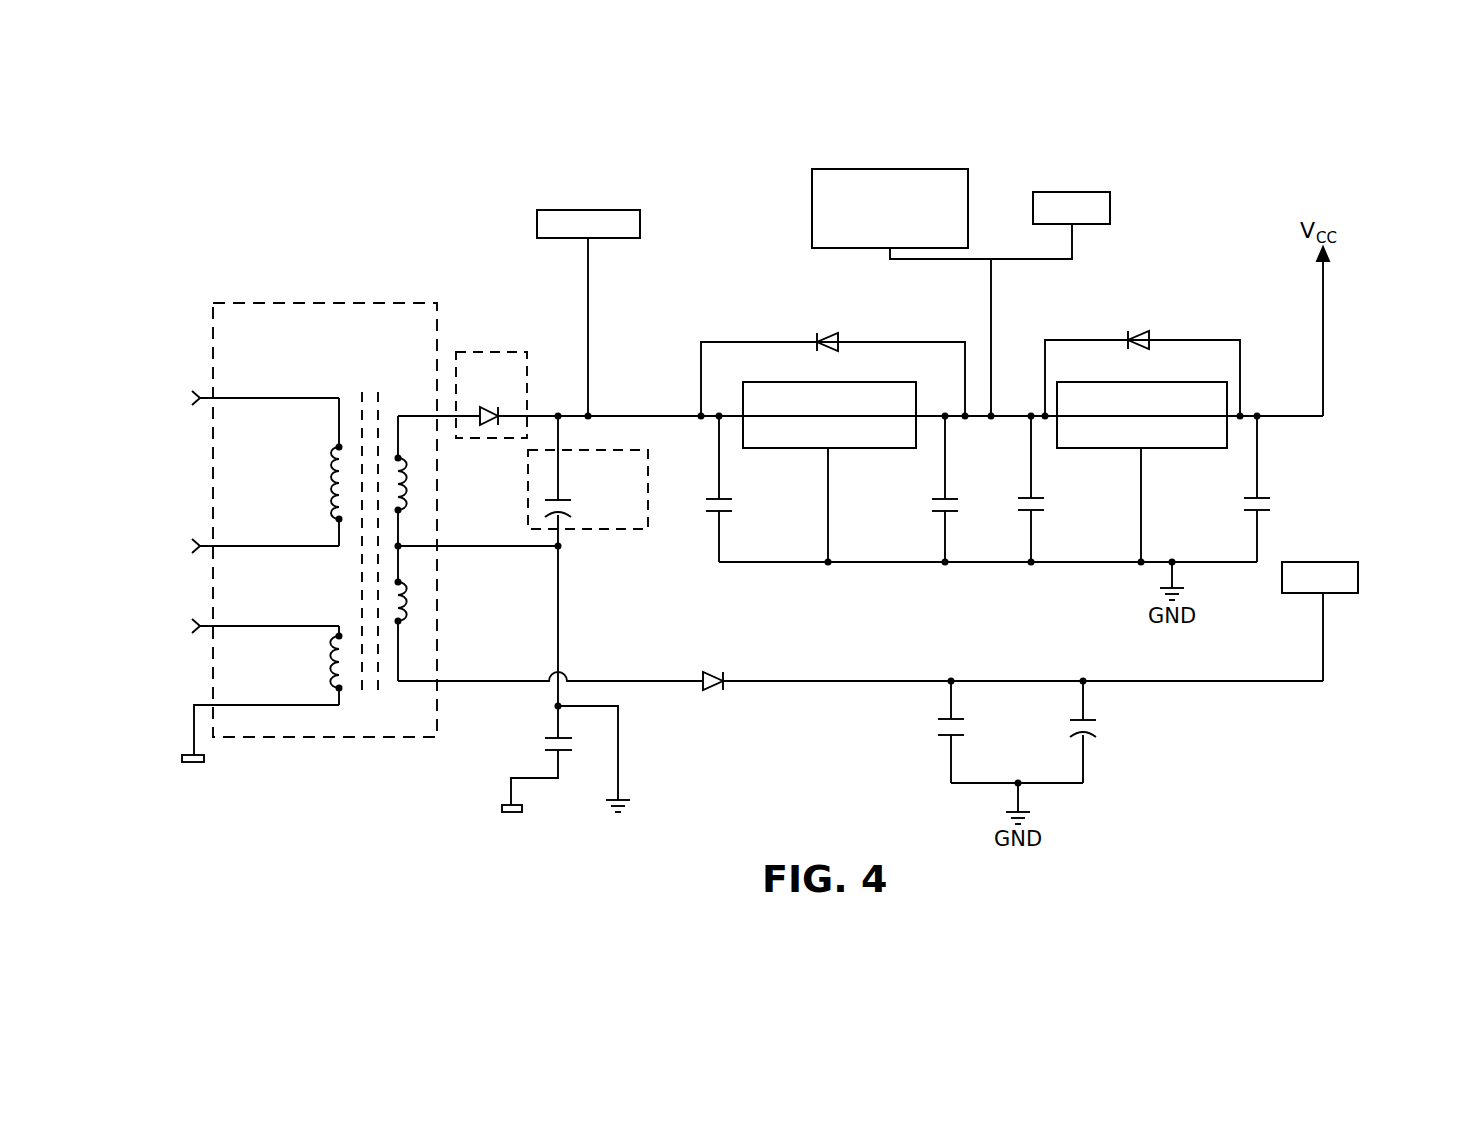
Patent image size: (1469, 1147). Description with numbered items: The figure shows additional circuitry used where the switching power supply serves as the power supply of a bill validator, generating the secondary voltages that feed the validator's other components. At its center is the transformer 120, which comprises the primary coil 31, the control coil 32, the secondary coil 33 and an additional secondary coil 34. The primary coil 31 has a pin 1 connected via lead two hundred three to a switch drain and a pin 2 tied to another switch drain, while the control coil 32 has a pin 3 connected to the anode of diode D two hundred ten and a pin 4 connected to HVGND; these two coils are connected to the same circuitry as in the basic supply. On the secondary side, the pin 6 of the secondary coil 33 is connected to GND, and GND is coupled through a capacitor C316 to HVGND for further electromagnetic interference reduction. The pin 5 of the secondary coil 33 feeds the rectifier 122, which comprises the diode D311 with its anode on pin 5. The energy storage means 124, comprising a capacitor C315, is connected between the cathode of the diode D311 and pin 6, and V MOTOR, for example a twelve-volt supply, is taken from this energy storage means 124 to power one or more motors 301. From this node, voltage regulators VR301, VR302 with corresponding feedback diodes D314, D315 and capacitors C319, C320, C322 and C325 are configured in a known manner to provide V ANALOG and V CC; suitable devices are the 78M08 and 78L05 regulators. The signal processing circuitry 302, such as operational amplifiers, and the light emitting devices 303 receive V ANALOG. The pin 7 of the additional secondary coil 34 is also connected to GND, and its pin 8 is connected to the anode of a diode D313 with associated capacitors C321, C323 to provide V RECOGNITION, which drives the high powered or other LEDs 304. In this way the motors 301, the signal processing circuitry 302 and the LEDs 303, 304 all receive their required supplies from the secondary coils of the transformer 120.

The transformer 120 is at (304, 302).
The rectifier 122 is at (521, 395).
The energy storage means 124 is at (617, 489).
The motors 301 is at (536, 233).
The signal processing circuitry 302 is at (812, 212).
The light emitting devices 303 is at (1111, 206).
The high powered LEDs 304 is at (1360, 578).
The primary coil 31 is at (322, 490).
The control coil 32 is at (322, 659).
The secondary coil 33 is at (414, 483).
The additional secondary coil 34 is at (414, 603).
The pin 1 is at (336, 446).
The pin 2 is at (337, 520).
The pin 3 is at (336, 637).
The pin 4 is at (337, 689).
The pin 5 is at (401, 458).
The pin 6 is at (401, 511).
The pin 7 is at (401, 582).
The pin 8 is at (401, 622).
The diode D311 is at (486, 405).
The diode D313 is at (707, 672).
The feedback diode D314 is at (827, 333).
The feedback diode D315 is at (1138, 331).
The capacitor C315 is at (578, 496).
The capacitor C316 is at (538, 742).
The capacitor C319 is at (706, 520).
The capacitor C320 is at (926, 502).
The capacitor C321 is at (926, 729).
The capacitor C322 is at (1057, 502).
The capacitor C323 is at (1107, 725).
The capacitor C325 is at (1285, 502).
The voltage regulator VR301 is at (790, 450).
The voltage regulator VR302 is at (1195, 450).